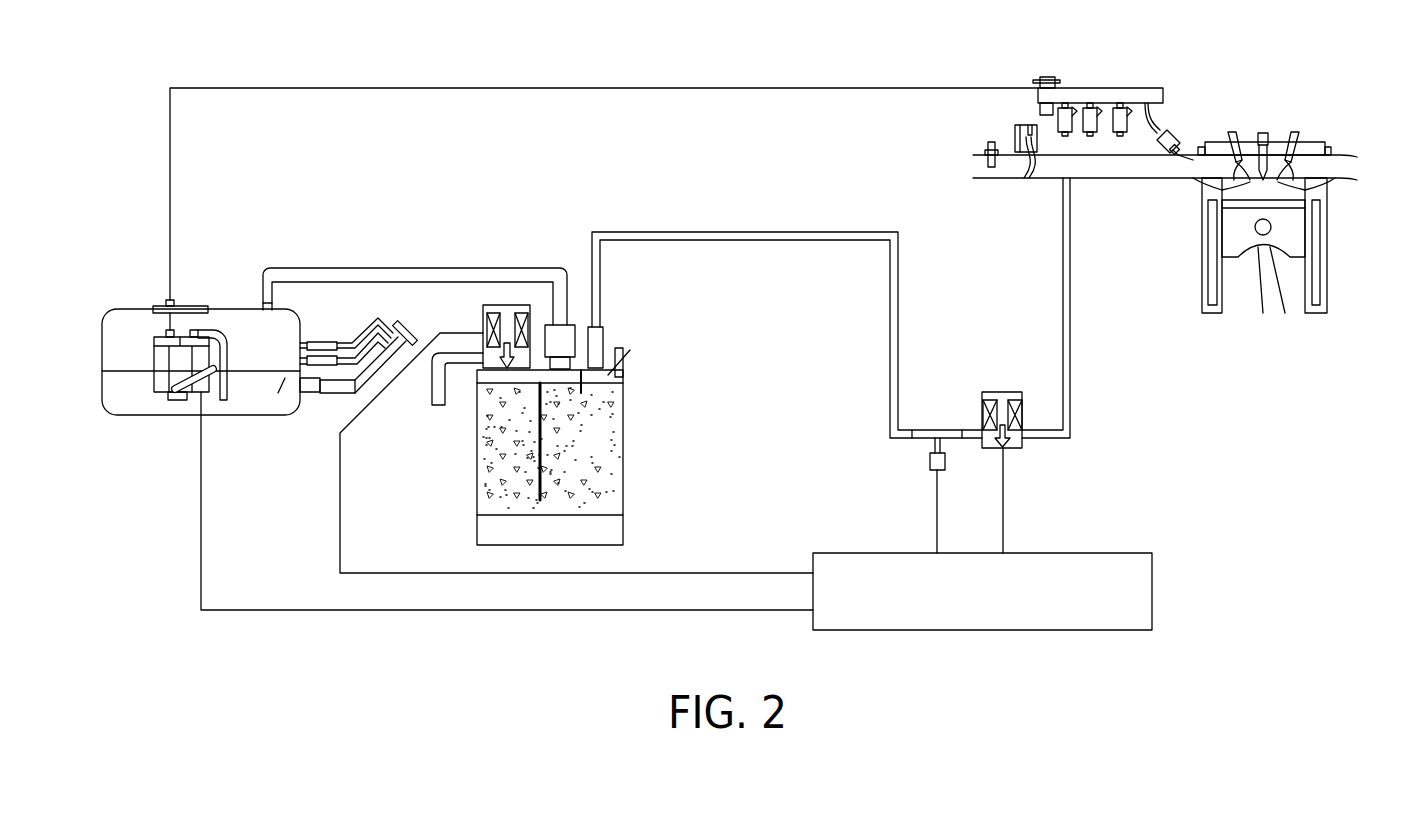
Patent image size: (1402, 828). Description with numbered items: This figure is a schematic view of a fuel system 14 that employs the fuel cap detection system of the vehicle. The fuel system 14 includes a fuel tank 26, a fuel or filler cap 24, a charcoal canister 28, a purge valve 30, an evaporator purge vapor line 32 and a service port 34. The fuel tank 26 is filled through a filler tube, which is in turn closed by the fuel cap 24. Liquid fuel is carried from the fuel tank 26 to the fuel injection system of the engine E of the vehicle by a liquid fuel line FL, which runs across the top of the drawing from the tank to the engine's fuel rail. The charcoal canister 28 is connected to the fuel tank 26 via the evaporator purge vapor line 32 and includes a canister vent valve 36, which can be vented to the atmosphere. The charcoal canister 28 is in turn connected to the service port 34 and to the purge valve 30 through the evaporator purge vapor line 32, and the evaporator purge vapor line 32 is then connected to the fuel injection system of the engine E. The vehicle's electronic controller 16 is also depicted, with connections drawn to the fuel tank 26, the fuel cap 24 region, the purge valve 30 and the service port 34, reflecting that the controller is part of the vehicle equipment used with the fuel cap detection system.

The fuel system 14 is at (820, 59).
The electronic controller 16 is at (1152, 593).
The fuel cap 24 is at (414, 320).
The fuel tank 26 is at (125, 415).
The charcoal canister 28 is at (623, 457).
The purge valve 30 is at (988, 392).
The evaporator purge vapor line 32 is at (1070, 358).
The service port 34 is at (930, 462).
The canister vent valve 36 is at (503, 305).
The liquid fuel line FL is at (503, 88).
The engine E is at (1327, 280).